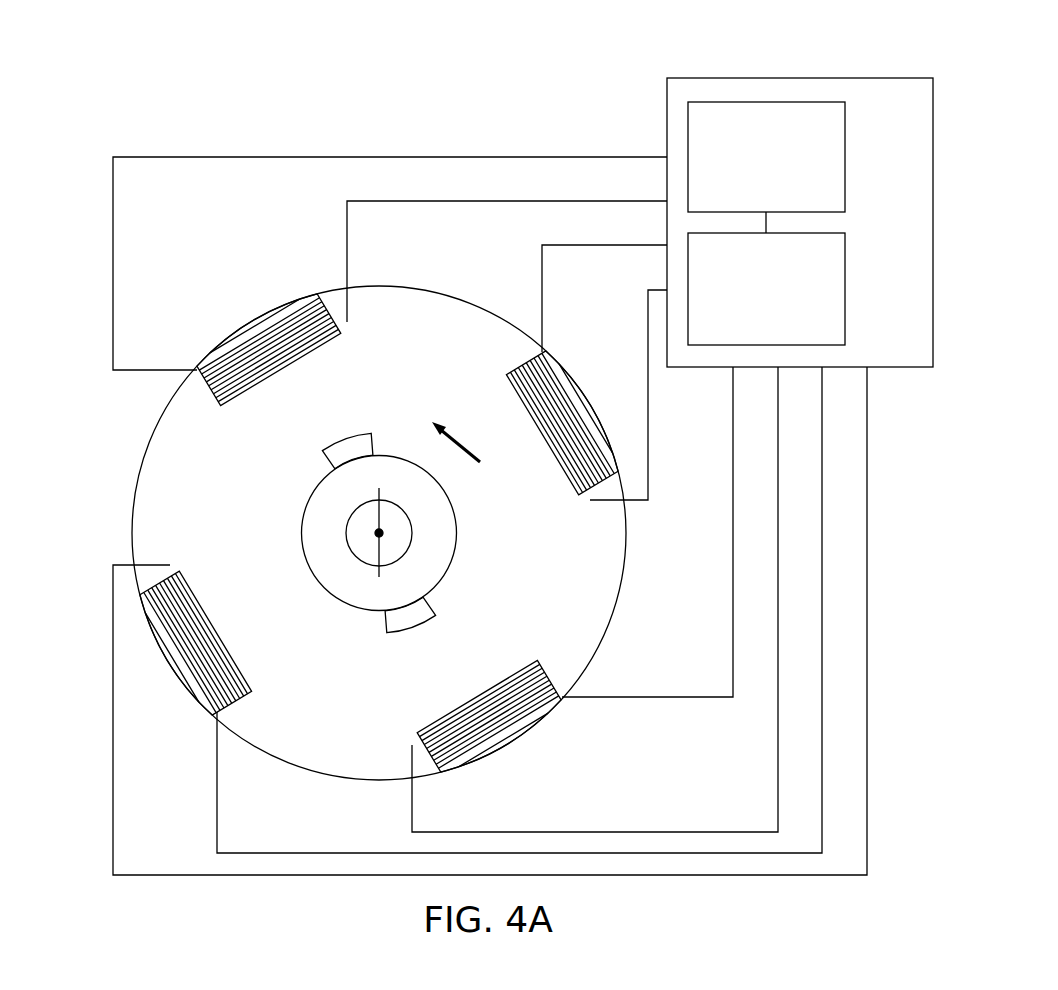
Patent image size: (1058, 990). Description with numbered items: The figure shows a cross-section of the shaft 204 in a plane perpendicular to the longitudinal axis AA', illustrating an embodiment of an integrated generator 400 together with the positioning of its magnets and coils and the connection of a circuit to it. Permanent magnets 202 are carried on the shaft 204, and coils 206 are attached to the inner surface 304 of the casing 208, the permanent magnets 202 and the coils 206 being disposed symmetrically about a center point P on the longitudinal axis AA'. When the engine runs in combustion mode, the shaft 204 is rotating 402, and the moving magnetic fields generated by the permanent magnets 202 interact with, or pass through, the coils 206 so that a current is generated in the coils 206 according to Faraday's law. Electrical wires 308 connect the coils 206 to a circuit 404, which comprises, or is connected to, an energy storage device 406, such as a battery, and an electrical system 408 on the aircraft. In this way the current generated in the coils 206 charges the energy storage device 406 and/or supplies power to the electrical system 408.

The integrated generator 400 is at (265, 65).
The circuit 404 is at (800, 188).
The energy storage device 406 is at (848, 155).
The electrical system 408 is at (848, 287).
The electrical wires 308 is at (92, 219).
The casing 208 is at (380, 284).
The inner surface 304 is at (140, 462).
The rotating 402 is at (466, 444).
The shaft 204 is at (302, 535).
The coils 206 is at (213, 627).
The permanent magnets 202 is at (385, 619).